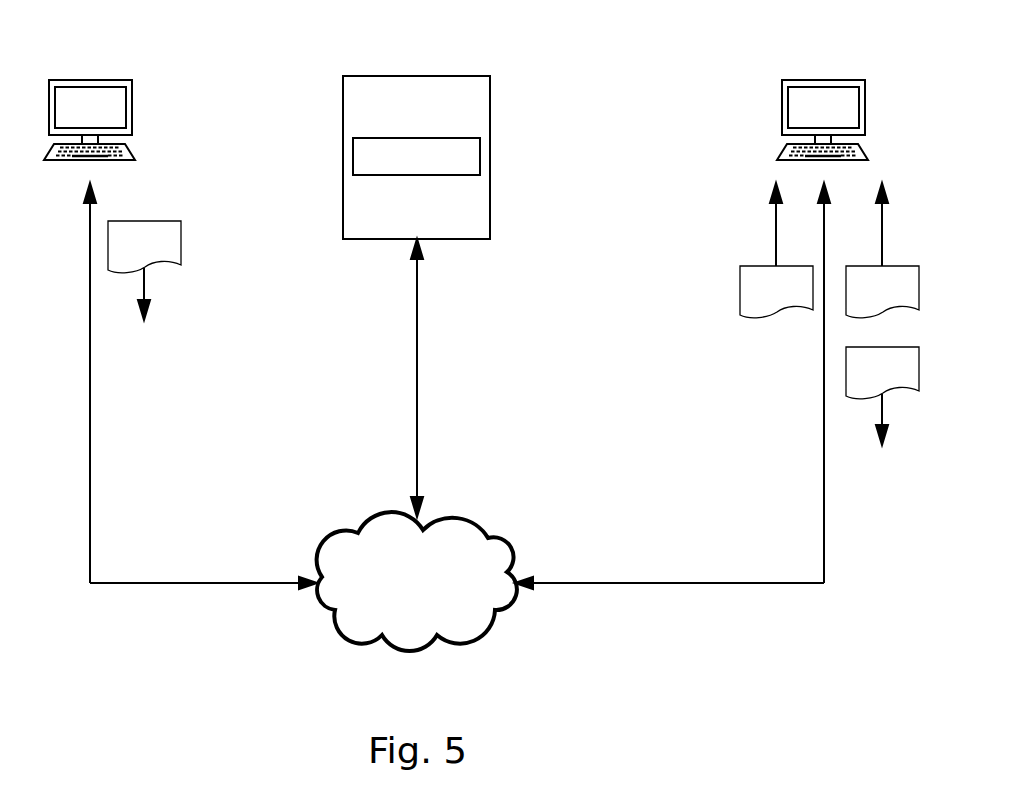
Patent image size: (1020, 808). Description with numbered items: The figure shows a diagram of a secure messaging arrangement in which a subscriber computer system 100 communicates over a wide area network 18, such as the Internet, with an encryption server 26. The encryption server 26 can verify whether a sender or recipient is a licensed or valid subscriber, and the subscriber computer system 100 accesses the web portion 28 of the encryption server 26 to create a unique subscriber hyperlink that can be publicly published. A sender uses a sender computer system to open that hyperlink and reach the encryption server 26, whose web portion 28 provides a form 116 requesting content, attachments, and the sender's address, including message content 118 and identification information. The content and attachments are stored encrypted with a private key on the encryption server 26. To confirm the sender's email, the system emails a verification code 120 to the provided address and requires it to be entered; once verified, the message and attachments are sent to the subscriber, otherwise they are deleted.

The subscriber computer system 100 is at (133, 95).
The encryption server 26 is at (490, 92).
The web portion 28 is at (480, 162).
The wide area network 18 is at (478, 525).
The verification code 120 is at (740, 286).
The form 116 is at (918, 283).
The message content 118 is at (918, 365).